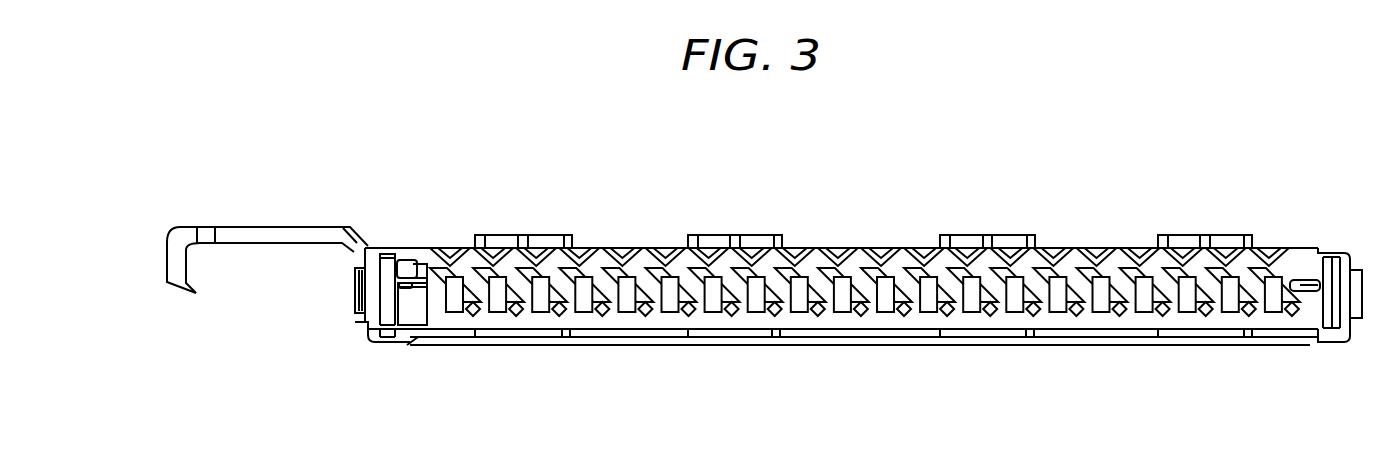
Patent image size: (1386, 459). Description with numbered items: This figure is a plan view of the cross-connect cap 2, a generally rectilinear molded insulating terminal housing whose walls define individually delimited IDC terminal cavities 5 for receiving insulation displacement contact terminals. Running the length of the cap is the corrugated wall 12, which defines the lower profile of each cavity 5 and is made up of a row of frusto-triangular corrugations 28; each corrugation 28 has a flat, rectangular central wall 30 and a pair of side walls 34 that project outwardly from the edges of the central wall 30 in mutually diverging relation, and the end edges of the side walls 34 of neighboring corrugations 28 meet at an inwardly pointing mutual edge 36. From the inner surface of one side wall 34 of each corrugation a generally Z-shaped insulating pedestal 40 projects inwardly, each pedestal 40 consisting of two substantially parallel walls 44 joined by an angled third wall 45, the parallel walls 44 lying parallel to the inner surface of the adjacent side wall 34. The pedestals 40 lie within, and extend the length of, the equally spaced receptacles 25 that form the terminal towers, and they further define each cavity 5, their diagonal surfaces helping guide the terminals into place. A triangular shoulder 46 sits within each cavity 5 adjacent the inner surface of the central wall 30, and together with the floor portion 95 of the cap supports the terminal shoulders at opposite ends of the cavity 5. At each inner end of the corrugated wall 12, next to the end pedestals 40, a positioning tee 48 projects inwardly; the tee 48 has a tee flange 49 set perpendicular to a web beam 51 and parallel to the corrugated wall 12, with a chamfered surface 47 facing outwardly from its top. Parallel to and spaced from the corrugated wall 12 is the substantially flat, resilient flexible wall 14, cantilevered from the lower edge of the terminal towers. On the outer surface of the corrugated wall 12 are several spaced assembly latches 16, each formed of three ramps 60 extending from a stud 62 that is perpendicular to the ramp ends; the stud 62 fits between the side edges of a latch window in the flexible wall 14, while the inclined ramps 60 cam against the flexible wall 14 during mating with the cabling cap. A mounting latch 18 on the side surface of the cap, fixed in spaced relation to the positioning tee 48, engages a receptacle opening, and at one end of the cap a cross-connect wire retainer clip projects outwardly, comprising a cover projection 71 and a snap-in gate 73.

The cross-connect cap 2 is at (819, 288).
The IDC terminal cavity 5 is at (589, 291).
The corrugated wall 12 is at (1268, 258).
The flexible wall 14 is at (871, 348).
The assembly latch 16 is at (703, 230).
The mounting latch 18 is at (345, 293).
The receptacle 25 is at (522, 326).
The frusto-triangular corrugation 28 is at (862, 240).
The central wall 30 is at (1073, 256).
The side wall 34 is at (1130, 265).
The inwardly pointing mutual edge 36 is at (453, 250).
The insulating pedestal 40 is at (948, 293).
The substantially parallel wall 44 is at (745, 268).
The third wall 45 is at (733, 292).
The triangular shoulder 46 is at (1048, 262).
The chamfered surface 47 is at (1313, 282).
The positioning tee 48 is at (1308, 302).
The tee flange 49 is at (424, 255).
The web beam 51 is at (425, 262).
The ramp 60 is at (478, 235).
The stud 62 is at (965, 248).
The cover projection 71 is at (252, 243).
The snap-in gate 73 is at (168, 263).
The floor portion 95 is at (1094, 328).